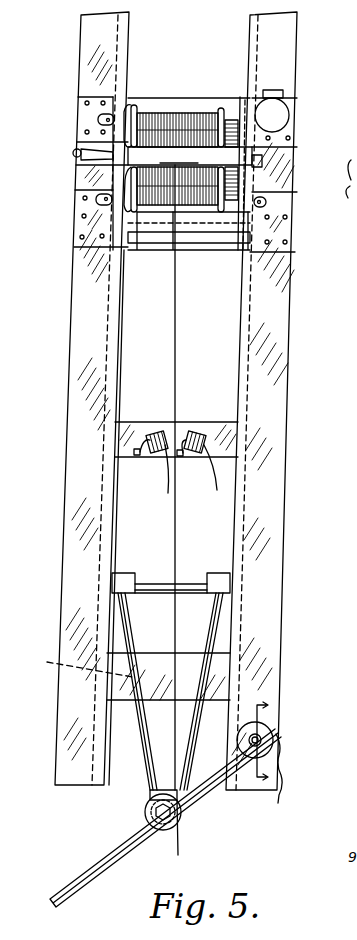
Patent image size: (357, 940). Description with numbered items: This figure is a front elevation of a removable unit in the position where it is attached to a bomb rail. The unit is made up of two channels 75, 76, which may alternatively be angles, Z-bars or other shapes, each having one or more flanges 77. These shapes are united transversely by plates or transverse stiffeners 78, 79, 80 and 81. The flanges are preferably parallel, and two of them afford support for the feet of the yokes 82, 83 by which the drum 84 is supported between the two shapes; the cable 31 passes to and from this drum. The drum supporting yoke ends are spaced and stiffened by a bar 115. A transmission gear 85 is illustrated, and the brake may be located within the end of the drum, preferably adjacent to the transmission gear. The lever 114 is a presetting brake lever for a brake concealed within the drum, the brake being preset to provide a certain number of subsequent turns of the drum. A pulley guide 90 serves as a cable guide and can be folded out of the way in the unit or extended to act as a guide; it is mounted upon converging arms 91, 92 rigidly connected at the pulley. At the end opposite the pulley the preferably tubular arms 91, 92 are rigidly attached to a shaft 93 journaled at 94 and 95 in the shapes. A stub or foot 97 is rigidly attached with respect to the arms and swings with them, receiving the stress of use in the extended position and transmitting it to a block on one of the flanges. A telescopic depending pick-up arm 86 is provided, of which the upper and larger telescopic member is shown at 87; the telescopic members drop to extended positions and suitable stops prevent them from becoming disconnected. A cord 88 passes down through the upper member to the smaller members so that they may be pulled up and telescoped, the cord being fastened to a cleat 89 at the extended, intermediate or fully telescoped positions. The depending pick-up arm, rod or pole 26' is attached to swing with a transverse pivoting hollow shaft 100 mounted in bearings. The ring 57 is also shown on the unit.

The flanges 77 is at (72, 341).
The channel 75 is at (70, 455).
The channel 76 is at (272, 481).
The transverse stiffener 81 is at (117, 693).
The transverse stiffener 78 is at (186, 102).
The bar 115 is at (195, 157).
The transmission gear 85 is at (232, 118).
The drum 84 is at (158, 118).
The transverse stiffener 79 is at (200, 245).
The ring 57 is at (278, 113).
The yoke 82 is at (130, 108).
The presetting brake lever 114 is at (82, 160).
The yoke 83 is at (260, 218).
The cable 31 is at (178, 342).
The transverse stiffener 80 is at (185, 424).
The shaft 93 is at (153, 584).
The journal 94 is at (126, 573).
The journal 95 is at (226, 583).
The arm 91 is at (128, 642).
The arm 92 is at (214, 613).
The stub (foot) 97 is at (80, 664).
The pulley guide 90 is at (181, 818).
The upper telescopic member 87 is at (140, 845).
The telescopic depending pick-up arm 86 is at (88, 892).
The depending pick-up arm 26' is at (51, 878).
The cord 88 is at (267, 748).
The cleat 89 is at (281, 775).
The transverse pivoting hollow shaft 100 is at (281, 710).